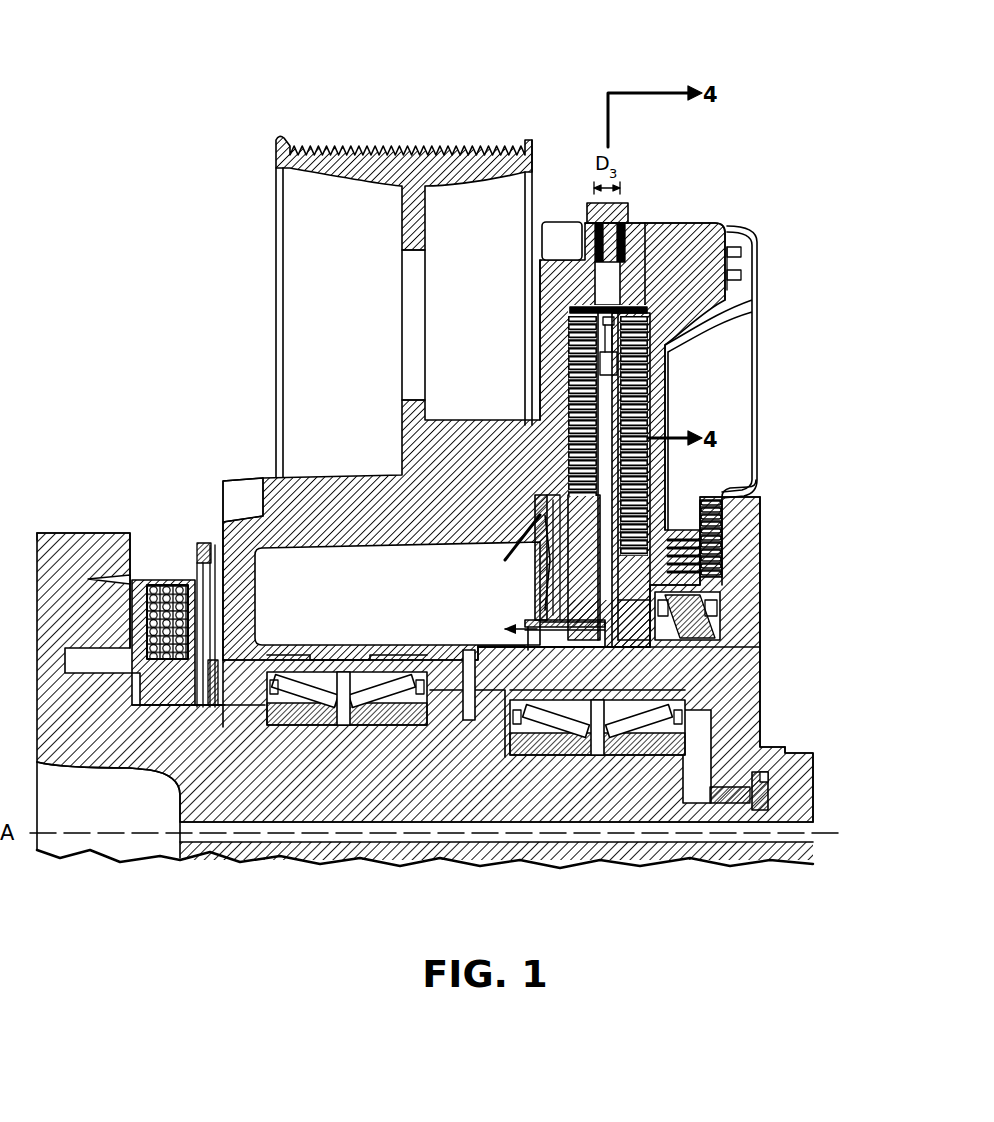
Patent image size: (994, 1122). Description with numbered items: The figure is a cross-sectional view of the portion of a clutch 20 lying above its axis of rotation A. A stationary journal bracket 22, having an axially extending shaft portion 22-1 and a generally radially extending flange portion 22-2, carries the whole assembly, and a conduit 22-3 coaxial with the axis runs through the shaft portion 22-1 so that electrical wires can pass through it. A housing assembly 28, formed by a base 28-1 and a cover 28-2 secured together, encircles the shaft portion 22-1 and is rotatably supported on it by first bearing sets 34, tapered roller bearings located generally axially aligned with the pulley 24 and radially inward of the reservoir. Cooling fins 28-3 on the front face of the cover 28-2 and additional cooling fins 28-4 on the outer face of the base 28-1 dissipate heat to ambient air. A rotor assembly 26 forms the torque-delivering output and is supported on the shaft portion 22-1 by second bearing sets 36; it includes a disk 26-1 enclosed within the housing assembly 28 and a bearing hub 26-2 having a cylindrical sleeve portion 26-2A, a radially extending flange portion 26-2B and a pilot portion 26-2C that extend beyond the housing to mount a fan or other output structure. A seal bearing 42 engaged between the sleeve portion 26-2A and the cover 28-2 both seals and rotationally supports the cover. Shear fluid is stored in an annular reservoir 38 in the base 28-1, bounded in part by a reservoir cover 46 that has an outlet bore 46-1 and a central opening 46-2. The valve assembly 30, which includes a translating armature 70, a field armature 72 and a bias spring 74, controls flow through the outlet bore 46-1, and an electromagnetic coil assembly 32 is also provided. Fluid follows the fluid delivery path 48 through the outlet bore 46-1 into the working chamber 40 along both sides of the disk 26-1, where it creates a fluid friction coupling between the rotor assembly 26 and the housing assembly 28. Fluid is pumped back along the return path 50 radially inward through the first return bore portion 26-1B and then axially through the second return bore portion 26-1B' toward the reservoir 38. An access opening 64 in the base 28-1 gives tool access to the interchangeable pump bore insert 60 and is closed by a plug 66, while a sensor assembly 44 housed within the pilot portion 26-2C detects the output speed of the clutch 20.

The clutch 20 is at (168, 118).
The journal bracket 22 is at (36, 569).
The shaft portion 22-1 is at (415, 862).
The flange portion 22-2 is at (100, 548).
The conduit 22-3 is at (285, 862).
The pulley 24 is at (330, 160).
The rotor assembly 26 is at (628, 603).
The disk 26-1 is at (595, 645).
The first return bore portion 26-1B is at (730, 480).
The second return bore portion 26-1B' is at (733, 666).
The bearing hub 26-2 is at (752, 652).
The sleeve portion 26-2A is at (497, 680).
The flange portion 26-2B is at (742, 525).
The pilot portion 26-2C is at (796, 765).
The housing assembly 28 is at (318, 528).
The base 28-1 is at (636, 232).
The cover 28-2 is at (693, 238).
The cooling fins 28-3 is at (744, 290).
The cooling fins 28-4 is at (244, 500).
The valve assembly 30 is at (676, 510).
The electromagnetic coil assembly 32 is at (163, 583).
The first bearing sets 34 is at (393, 710).
The second bearing sets 36 is at (636, 740).
The reservoir 38 is at (345, 617).
The working chamber 40 is at (572, 312).
The seal bearing 42 is at (682, 622).
The sensor assembly 44 is at (762, 800).
The reservoir cover 46 is at (545, 565).
The outlet bore 46-1 is at (515, 528).
The central opening 46-2 is at (535, 620).
The fluid delivery path 48 is at (530, 540).
The return path 50 is at (525, 633).
The interchangeable pump bore insert 60 is at (702, 343).
The access opening 64 is at (606, 278).
The plug 66 is at (626, 213).
The translating armature 70 is at (216, 607).
The field armature 72 is at (196, 705).
The bias spring 74 is at (200, 562).